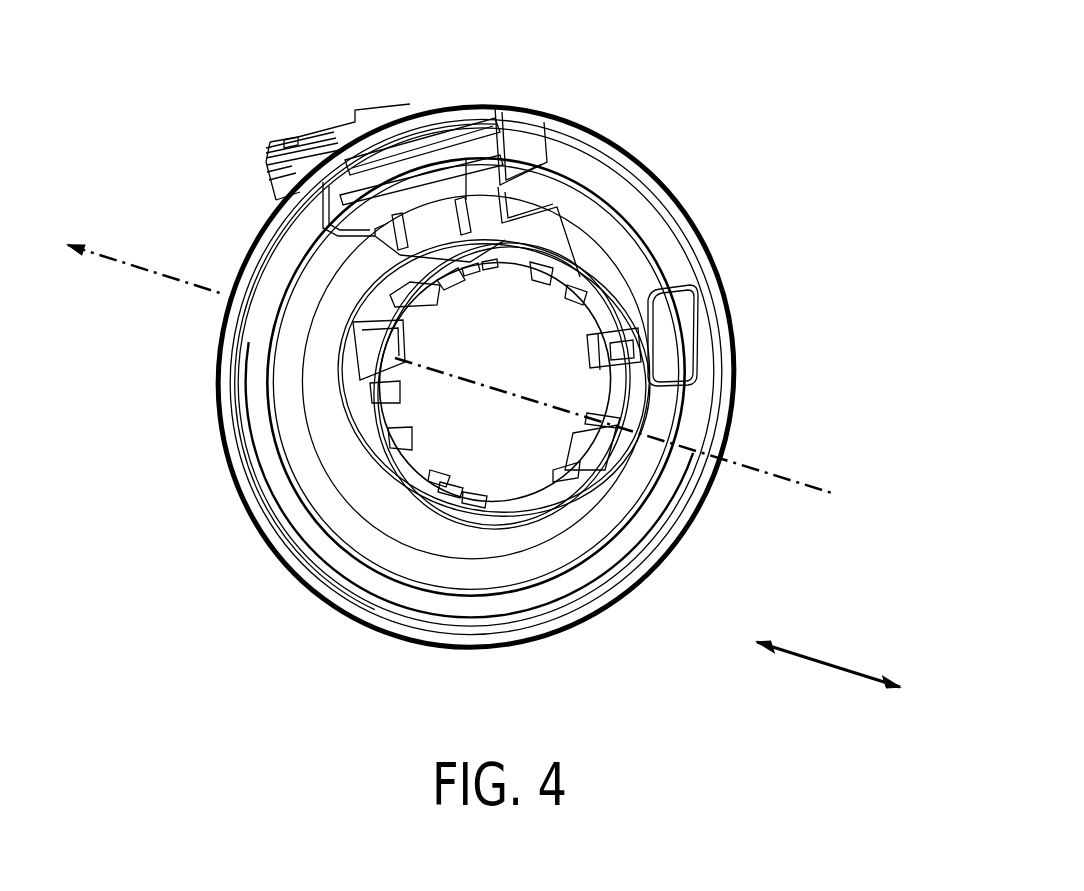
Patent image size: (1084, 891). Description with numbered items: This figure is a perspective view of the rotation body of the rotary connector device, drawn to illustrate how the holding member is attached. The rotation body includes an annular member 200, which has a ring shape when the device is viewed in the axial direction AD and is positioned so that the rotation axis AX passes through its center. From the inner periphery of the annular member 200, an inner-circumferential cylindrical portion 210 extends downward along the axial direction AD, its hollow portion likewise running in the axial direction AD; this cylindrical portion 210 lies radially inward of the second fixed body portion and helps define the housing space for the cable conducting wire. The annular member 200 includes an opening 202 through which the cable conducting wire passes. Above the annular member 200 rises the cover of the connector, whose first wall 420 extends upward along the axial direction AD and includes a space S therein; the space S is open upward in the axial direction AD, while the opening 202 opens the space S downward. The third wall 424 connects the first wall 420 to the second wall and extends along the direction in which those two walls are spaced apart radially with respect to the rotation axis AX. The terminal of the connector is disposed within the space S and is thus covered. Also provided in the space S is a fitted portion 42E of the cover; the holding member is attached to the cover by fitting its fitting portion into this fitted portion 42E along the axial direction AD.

The annular member 200 is at (733, 360).
The inner-circumferential cylindrical portion 210 is at (418, 462).
The first wall 420 is at (327, 137).
The third wall 424 is at (275, 175).
The space S is at (466, 160).
The opening 202 is at (567, 147).
The fitted portion 42E is at (372, 238).
The rotation axis AX is at (112, 257).
The axial direction AD is at (827, 660).